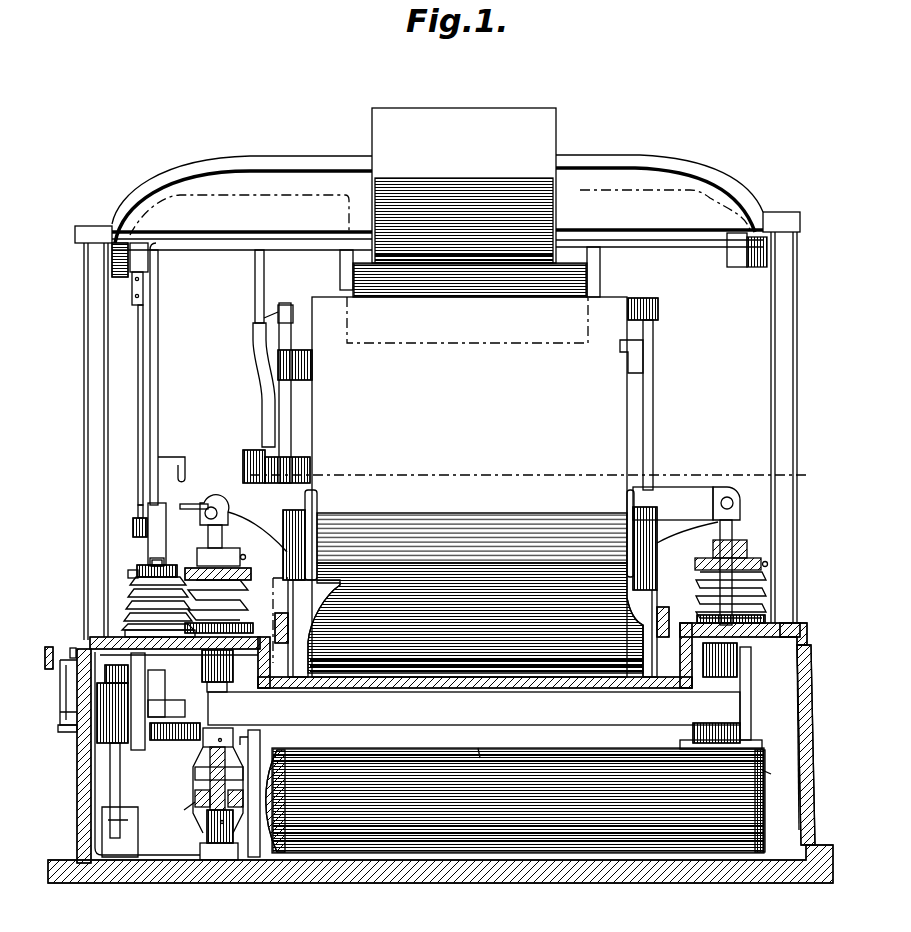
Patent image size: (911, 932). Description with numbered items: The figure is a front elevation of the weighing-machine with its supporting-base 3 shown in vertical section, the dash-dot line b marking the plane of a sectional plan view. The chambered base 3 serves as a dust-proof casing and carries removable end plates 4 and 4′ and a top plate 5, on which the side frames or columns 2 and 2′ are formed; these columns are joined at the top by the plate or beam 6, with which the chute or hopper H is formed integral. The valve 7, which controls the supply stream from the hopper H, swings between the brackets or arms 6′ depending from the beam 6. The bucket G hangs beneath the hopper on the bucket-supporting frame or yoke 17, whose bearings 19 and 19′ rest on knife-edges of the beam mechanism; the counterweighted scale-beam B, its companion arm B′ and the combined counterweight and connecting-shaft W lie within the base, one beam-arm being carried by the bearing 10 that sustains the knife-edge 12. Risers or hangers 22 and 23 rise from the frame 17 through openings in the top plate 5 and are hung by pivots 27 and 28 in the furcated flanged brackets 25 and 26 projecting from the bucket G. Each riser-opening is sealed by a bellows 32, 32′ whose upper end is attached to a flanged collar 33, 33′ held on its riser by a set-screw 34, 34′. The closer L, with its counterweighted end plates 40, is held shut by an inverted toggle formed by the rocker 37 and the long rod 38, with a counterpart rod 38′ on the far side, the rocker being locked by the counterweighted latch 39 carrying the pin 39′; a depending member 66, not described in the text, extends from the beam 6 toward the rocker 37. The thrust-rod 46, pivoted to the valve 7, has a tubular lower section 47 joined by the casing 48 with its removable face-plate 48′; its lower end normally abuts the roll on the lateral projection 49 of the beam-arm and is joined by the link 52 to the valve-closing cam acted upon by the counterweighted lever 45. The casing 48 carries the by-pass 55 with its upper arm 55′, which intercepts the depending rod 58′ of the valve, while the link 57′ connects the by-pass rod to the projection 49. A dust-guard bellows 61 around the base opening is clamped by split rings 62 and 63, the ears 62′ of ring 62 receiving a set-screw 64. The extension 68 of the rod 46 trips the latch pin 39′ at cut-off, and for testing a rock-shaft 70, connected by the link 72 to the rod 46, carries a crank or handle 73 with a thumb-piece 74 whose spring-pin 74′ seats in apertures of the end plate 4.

The side frame or column 2 is at (93, 357).
The side frame or column 2′ is at (778, 349).
The chambered supporting-base 3 is at (433, 870).
The end plate 4 is at (78, 787).
The end plate 4′ is at (805, 746).
The top plate 5 is at (795, 622).
The plate or beam 6 is at (268, 168).
The brackets or arms 6′ is at (108, 262).
The valve 7 is at (588, 280).
The bearing 10 is at (212, 797).
The knife-edge 12 is at (205, 775).
The bucket-supporting frame or yoke 17 is at (474, 708).
The bearing 19 is at (280, 740).
The bearing bracket 19′ is at (752, 742).
The riser or hanger 22 is at (208, 535).
The riser or hanger 23 is at (735, 531).
The flanged bracket 25 is at (310, 478).
The flanged bracket 26 is at (668, 488).
The pivot 27 is at (213, 505).
The pivot 28 is at (730, 495).
The bellows 32 is at (246, 606).
The bellows 32′ is at (700, 596).
The flanged collar 33 is at (233, 532).
The flanged collar 33′ is at (713, 548).
The set-screw 34 is at (242, 555).
The set-screw 34′ is at (740, 558).
The rocker 37 is at (262, 366).
The rod 38 is at (295, 413).
The rod 38′ is at (652, 383).
The latch 39 is at (253, 450).
The pin 39′ is at (192, 503).
The counterweighted end plates 40 is at (317, 522).
The counterweighted lever 45 is at (110, 795).
The rod 46 is at (158, 386).
The tubular section 47 is at (153, 669).
The casing 48 is at (150, 546).
The face-plate 48′ is at (148, 557).
The lateral projection 49 is at (180, 745).
The link 52 is at (100, 745).
The by-pass device 55 is at (133, 525).
The upper arm 55′ is at (137, 503).
The link 57′ is at (208, 706).
The depending rod 58′ is at (138, 388).
The dust-guard 61 is at (128, 598).
The split annular ring 62 is at (137, 575).
The ears or offsets 62′ is at (165, 565).
The split annular ring 63 is at (122, 631).
The set-screw 64 is at (140, 572).
The lever 66 is at (256, 281).
The extension 68 is at (182, 465).
The rock-shaft 70 is at (62, 720).
The link 72 is at (160, 690).
The crank or handle 73 is at (62, 686).
The thumb-piece 74 is at (49, 647).
The spring pin 74′ is at (73, 647).
The bucket G is at (500, 487).
The chute or hopper H is at (464, 185).
The closer L is at (306, 627).
The combined counterweight and connecting-shaft W is at (515, 789).
The scale-beam B is at (205, 790).
The bearing B′ is at (771, 801).
The section line b is at (425, 562).